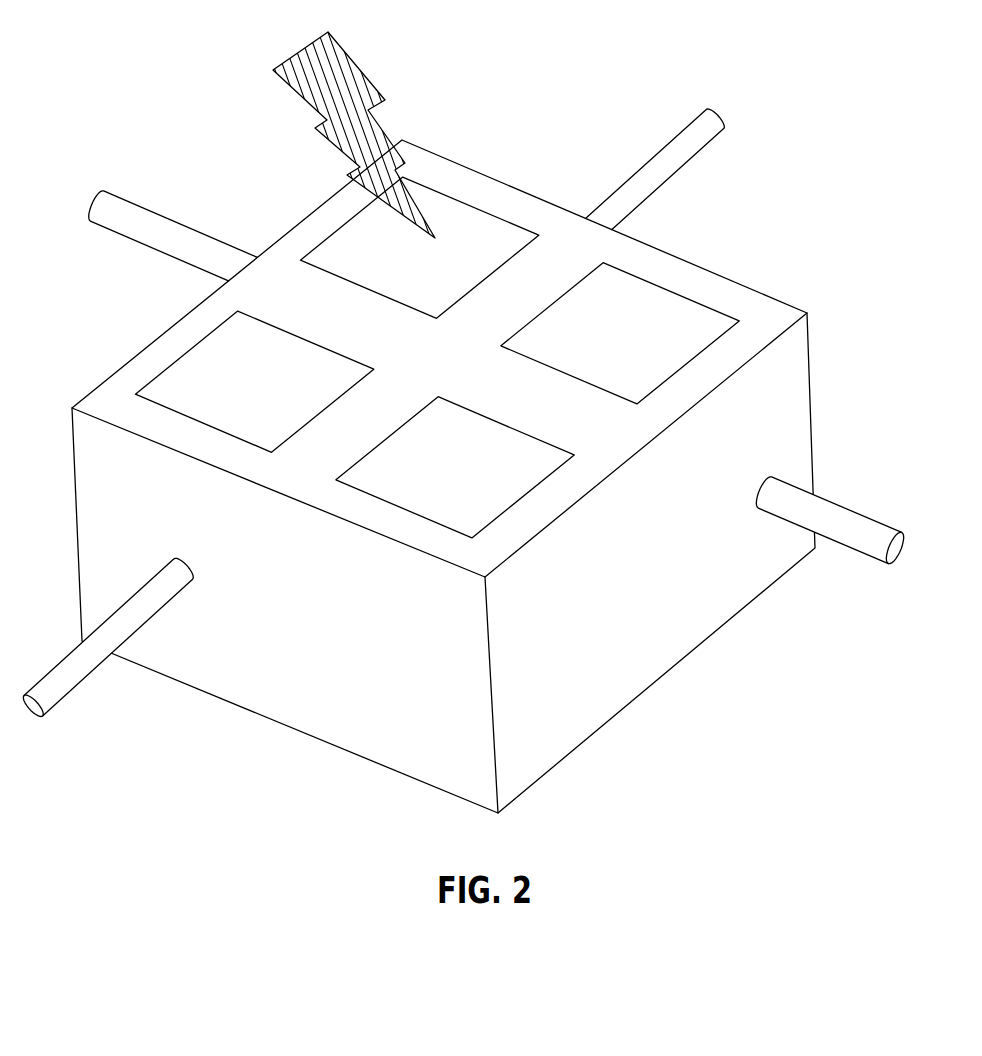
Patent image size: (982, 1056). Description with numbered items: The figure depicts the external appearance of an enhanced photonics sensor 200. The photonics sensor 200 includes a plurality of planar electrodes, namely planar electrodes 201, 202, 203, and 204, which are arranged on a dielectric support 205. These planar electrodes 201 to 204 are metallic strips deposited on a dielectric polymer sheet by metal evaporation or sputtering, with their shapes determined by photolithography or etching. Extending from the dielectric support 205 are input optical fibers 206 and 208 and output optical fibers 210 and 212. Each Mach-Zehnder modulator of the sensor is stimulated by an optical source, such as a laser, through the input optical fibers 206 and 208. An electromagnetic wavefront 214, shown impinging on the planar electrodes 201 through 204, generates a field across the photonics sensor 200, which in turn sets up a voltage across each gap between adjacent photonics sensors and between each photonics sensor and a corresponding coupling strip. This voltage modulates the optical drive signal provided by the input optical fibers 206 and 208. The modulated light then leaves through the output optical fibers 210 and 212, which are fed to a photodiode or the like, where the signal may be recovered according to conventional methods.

The photonics sensor 200 is at (147, 782).
The planar electrode 201 is at (470, 232).
The planar electrode 202 is at (685, 328).
The planar electrode 203 is at (457, 503).
The planar electrode 204 is at (215, 365).
The dielectric support 205 is at (587, 692).
The input optical fiber 206 is at (128, 236).
The input optical fiber 208 is at (704, 150).
The output optical fiber 210 is at (862, 545).
The output optical fiber 212 is at (67, 690).
The electromagnetic wavefront 214 is at (347, 63).